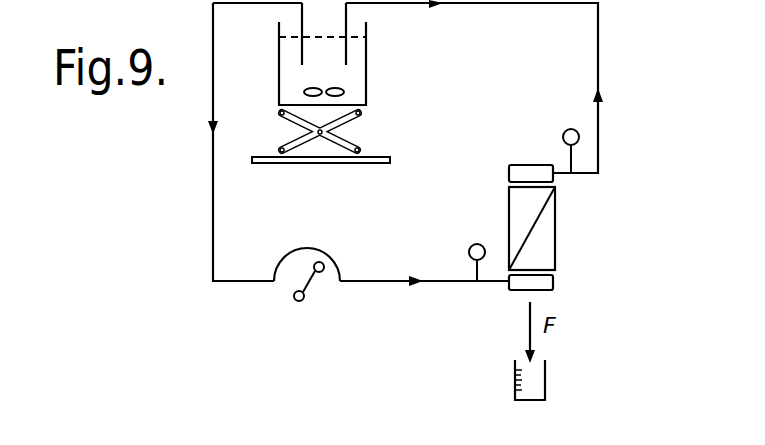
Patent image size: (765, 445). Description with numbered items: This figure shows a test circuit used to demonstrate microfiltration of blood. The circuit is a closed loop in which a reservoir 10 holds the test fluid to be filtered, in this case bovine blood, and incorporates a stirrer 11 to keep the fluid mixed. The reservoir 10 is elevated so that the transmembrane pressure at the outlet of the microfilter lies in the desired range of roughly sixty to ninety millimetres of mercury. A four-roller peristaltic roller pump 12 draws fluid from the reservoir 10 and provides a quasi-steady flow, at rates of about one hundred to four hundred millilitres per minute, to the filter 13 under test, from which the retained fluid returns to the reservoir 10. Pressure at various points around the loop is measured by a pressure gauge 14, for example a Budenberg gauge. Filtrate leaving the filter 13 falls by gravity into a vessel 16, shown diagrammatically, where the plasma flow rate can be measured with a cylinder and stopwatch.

The reservoir 10 is at (366, 57).
The stirrer 11 is at (343, 89).
The peristaltic roller pump 12 is at (309, 232).
The filter 13 is at (568, 226).
The pressure gauge 14 is at (566, 130).
The vessel 16 is at (542, 381).